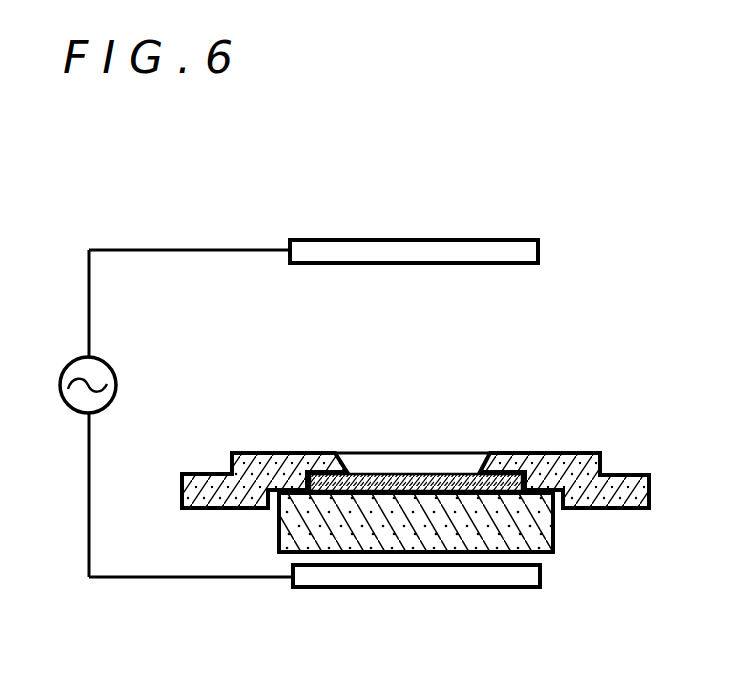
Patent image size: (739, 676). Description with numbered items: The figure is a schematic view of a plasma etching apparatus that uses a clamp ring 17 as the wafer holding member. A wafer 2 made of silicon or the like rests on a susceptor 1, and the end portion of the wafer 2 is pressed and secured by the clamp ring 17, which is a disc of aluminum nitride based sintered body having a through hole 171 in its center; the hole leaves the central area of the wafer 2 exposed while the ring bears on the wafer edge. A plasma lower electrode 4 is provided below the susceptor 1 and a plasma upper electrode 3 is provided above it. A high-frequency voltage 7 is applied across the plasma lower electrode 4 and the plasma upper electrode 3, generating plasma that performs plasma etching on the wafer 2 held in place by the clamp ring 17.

The susceptor 1 is at (553, 540).
The wafer 2 is at (422, 470).
The plasma upper electrode 3 is at (538, 250).
The plasma lower electrode 4 is at (540, 586).
The high-frequency voltage 7 is at (99, 362).
The clamp ring 17 is at (538, 460).
The through hole 171 is at (373, 450).